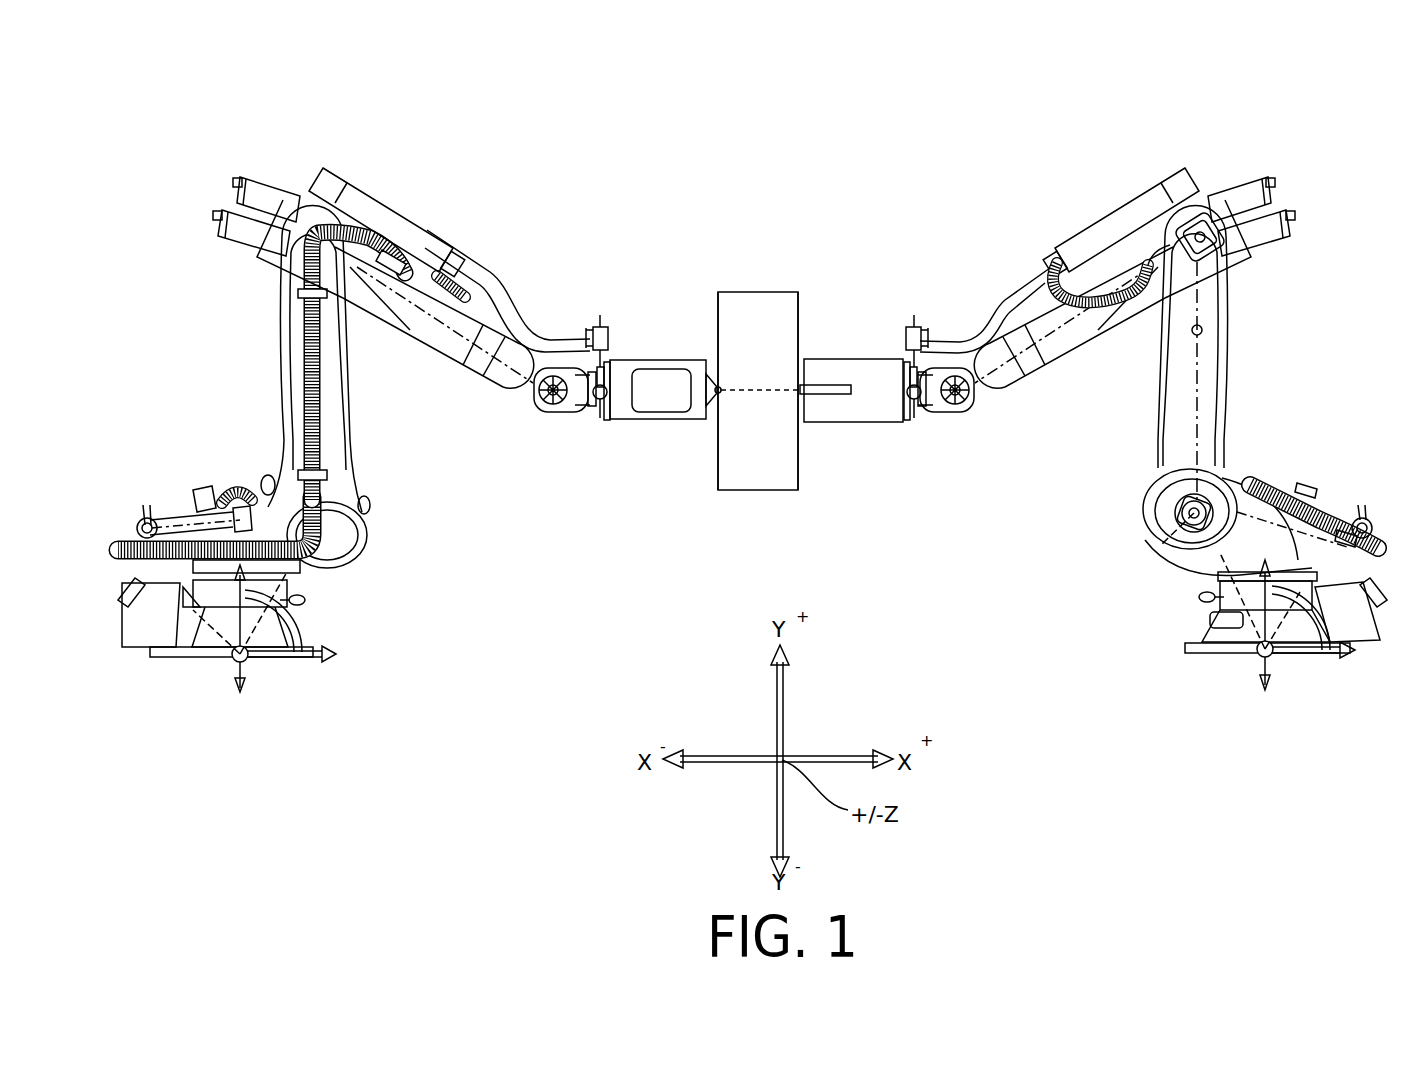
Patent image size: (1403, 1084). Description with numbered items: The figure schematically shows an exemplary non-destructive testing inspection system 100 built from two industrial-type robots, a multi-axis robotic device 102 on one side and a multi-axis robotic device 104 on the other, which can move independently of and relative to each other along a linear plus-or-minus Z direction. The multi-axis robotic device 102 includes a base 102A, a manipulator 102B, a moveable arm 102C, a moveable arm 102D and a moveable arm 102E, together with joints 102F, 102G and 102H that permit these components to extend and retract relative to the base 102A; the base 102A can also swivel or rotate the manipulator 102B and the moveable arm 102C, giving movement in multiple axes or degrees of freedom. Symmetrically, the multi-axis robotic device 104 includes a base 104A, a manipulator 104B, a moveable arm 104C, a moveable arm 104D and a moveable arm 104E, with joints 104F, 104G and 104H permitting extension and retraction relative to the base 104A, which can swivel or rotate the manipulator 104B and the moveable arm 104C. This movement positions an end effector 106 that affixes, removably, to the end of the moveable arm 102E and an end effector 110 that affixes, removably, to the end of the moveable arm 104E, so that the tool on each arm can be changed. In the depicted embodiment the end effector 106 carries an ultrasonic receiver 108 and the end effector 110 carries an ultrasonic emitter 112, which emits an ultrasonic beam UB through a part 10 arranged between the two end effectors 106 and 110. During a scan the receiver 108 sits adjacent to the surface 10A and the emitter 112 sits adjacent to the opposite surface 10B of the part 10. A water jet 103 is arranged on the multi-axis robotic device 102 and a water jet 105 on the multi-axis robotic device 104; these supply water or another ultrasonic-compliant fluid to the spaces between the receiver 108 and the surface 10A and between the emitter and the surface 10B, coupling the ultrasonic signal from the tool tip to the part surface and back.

The NDT inspection system 100 is at (756, 368).
The multi-axis robotic device 102 is at (365, 407).
The base 102A is at (300, 615).
The manipulator 102B is at (232, 490).
The moveable arm 102C is at (282, 368).
The moveable arm 102D is at (478, 300).
The moveable arm 102E is at (533, 400).
The joint 102F is at (355, 535).
The joint 102G is at (312, 242).
The joint 102H is at (557, 407).
The water jet 103 is at (594, 323).
The multi-axis robotic device 104 is at (1149, 399).
The base 104A is at (1207, 620).
The manipulator 104B is at (1257, 482).
The moveable arm 104C is at (1227, 370).
The moveable arm 104D is at (1095, 340).
The moveable arm 104E is at (932, 407).
The joint 104F is at (1182, 523).
The joint 104G is at (1200, 235).
The joint 104H is at (972, 410).
The water jet 105 is at (925, 330).
The end effector 106 is at (657, 360).
The ultrasonic receiver 108 is at (697, 420).
The part 10 is at (791, 343).
The surface 10A is at (718, 300).
The surface 10B is at (798, 340).
The ultrasonic beam UB is at (768, 388).
The end effector 110 is at (880, 360).
The ultrasonic emitter 112 is at (823, 397).